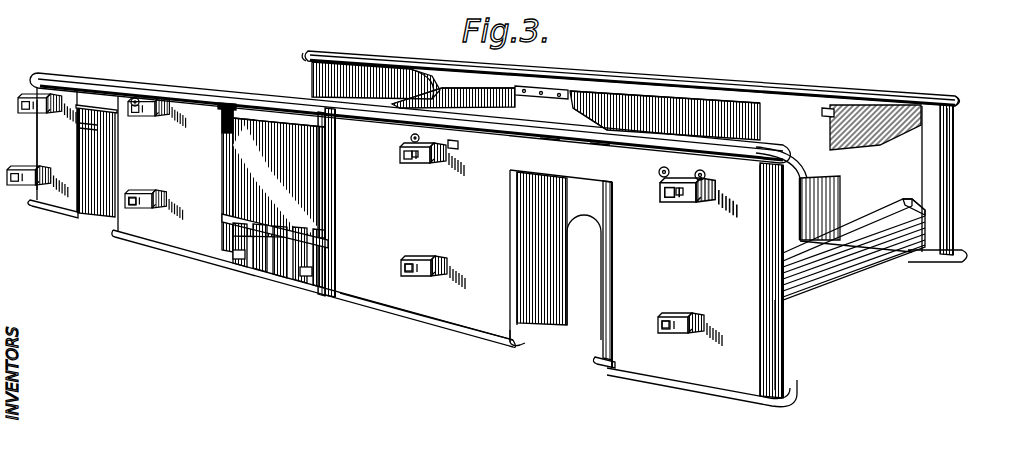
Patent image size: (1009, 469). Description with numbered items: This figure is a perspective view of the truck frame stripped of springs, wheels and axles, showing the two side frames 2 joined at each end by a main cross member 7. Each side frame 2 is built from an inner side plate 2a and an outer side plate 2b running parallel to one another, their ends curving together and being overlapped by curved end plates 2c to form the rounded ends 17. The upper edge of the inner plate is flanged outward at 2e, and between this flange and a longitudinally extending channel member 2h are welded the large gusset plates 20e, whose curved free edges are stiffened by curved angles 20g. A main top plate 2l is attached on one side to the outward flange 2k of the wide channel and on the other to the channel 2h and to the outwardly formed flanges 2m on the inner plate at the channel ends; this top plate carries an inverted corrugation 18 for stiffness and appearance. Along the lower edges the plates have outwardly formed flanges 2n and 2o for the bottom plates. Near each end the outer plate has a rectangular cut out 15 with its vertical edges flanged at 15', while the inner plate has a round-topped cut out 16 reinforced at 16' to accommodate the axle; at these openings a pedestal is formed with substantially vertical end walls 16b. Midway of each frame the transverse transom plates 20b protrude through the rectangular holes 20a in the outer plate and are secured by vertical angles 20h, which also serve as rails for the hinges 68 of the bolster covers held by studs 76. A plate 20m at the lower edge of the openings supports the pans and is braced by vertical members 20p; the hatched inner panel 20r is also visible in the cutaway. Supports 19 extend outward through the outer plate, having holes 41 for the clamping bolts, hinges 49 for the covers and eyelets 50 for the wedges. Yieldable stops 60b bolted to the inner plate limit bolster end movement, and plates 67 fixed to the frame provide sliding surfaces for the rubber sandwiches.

The side frame 2 is at (193, 237).
The inner side plate 2a is at (757, 75).
The outer side plate 2b is at (360, 302).
The curved end plate 2c is at (954, 132).
The outward flange of inner side plate 2e is at (832, 108).
The longitudinally extending channel member 2h is at (800, 96).
The outward flange of channel 2k is at (551, 141).
The main top plate 2l is at (602, 144).
The outwardly formed flange 2m is at (308, 52).
The outwardly formed flange of inner side plate 2n is at (896, 254).
The outwardly formed flange of outer side plate 2o is at (446, 320).
The main cross member 7 is at (800, 298).
The rectangular cut out portion 15 is at (284, 280).
The vertical edge flange of cut out 15' is at (601, 373).
The cut out portion with rounded top 16 is at (559, 256).
The edge reinforcement of cut out 16' is at (721, 257).
The pedestal end wall 16b is at (100, 217).
The rounded end of frame 17 is at (37, 136).
The inverted corrugation of top plate 18 is at (127, 78).
The support 19 is at (148, 122).
The rectangular hole in outer side plate 20a is at (236, 110).
The transverse transom plate 20b is at (603, 63).
The gusset plate 20e is at (632, 55).
The curved angle 20g is at (645, 110).
The vertical angle 20h is at (349, 190).
The plate 20m is at (330, 245).
The vertical member 20p is at (280, 252).
The inner panel 20r is at (400, 68).
The hole of support 41 is at (413, 160).
The hinge 49 is at (160, 86).
The eyelet 50 is at (133, 206).
The stop 60b is at (553, 88).
The plate 67 is at (306, 142).
The hinge 68 is at (227, 104).
The stud 76 is at (233, 257).